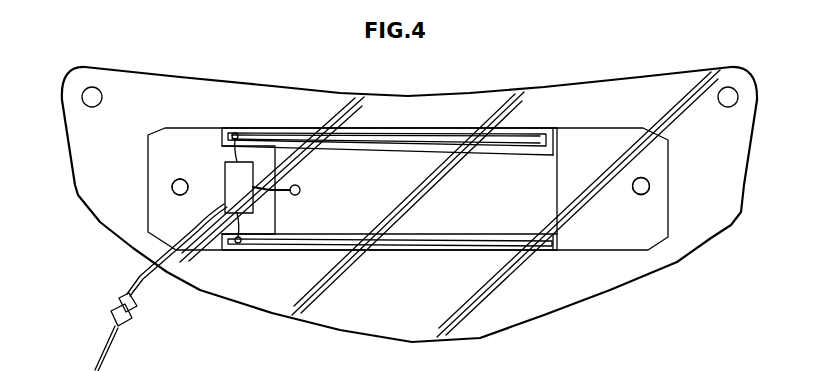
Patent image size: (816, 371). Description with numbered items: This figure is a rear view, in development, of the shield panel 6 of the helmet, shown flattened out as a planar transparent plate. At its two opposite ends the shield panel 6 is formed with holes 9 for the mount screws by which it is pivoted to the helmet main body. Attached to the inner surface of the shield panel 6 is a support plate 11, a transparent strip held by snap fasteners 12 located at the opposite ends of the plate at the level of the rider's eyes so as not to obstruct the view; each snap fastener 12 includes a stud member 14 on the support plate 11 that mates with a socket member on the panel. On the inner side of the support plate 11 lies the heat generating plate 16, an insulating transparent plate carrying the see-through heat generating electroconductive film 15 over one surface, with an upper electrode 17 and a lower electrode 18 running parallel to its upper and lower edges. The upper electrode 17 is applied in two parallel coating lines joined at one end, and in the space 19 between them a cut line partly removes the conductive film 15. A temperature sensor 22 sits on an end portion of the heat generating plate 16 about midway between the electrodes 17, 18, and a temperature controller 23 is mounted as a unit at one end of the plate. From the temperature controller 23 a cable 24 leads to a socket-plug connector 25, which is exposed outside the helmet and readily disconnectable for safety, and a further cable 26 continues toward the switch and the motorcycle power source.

The shield panel 6 is at (464, 107).
The holes 9 is at (99, 92).
The support plate 11 is at (602, 242).
The snap fasteners 12 is at (166, 183).
The stud member 14 is at (176, 192).
The heat generating electroconductive film 15 is at (447, 225).
The heat generating plate 16 is at (562, 182).
The upper electrode 17 is at (528, 148).
The lower electrode 18 is at (402, 238).
The space 19 is at (354, 143).
The temperature sensor 22 is at (300, 195).
The temperature controller 23 is at (235, 180).
The cable 24 is at (142, 282).
The socket-plug connector 25 is at (128, 316).
The cable 26 is at (107, 337).